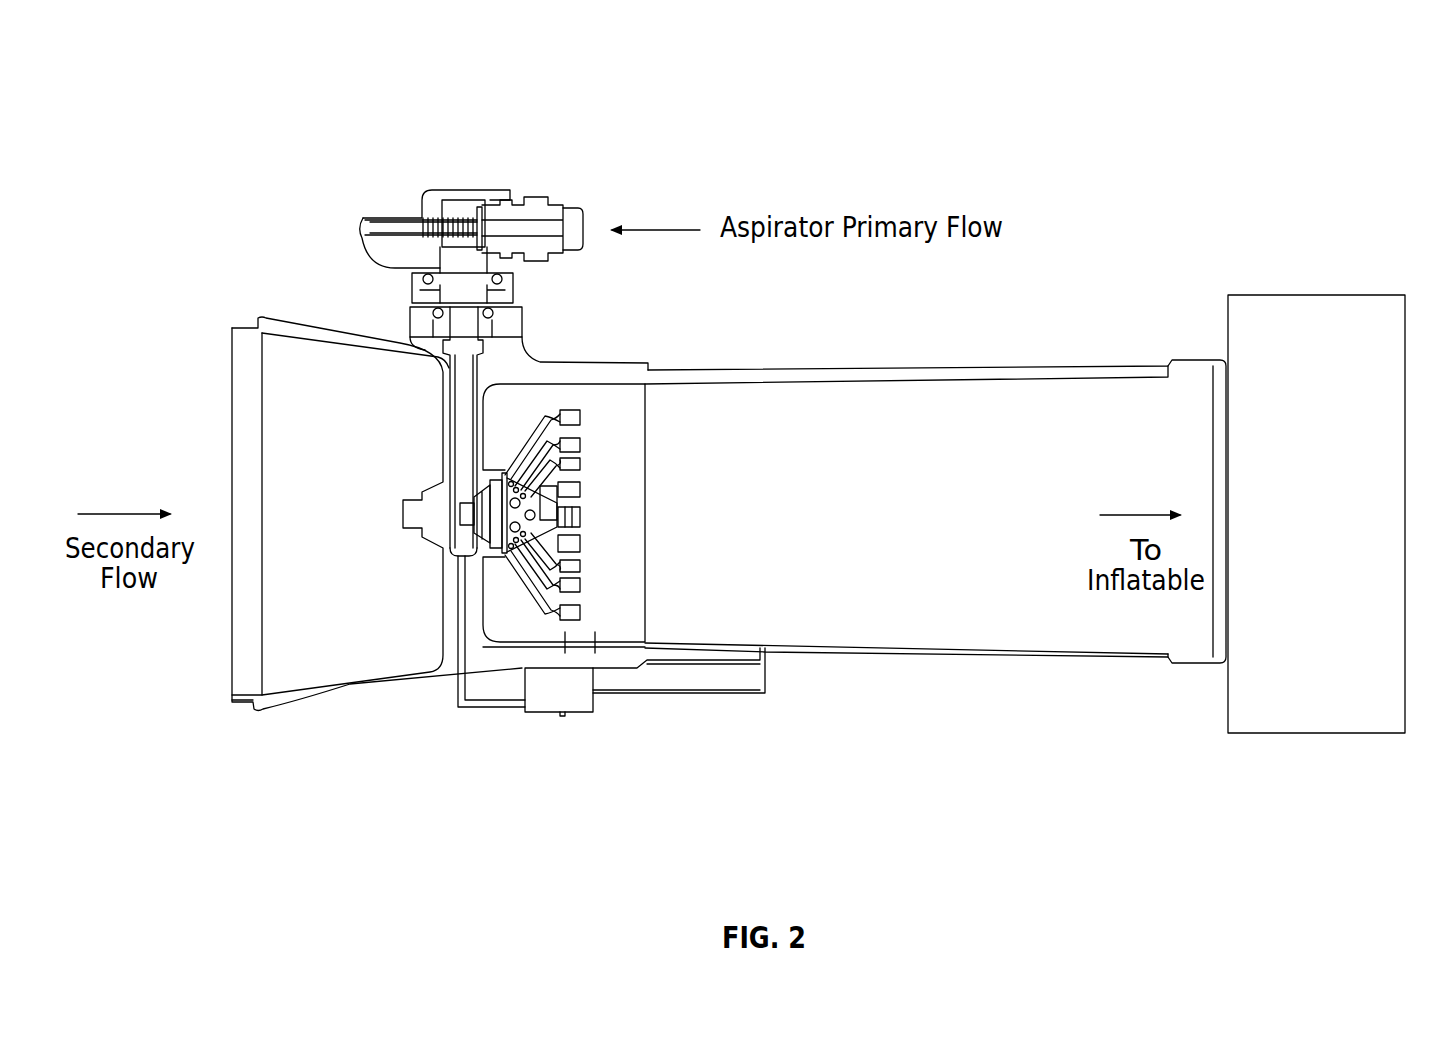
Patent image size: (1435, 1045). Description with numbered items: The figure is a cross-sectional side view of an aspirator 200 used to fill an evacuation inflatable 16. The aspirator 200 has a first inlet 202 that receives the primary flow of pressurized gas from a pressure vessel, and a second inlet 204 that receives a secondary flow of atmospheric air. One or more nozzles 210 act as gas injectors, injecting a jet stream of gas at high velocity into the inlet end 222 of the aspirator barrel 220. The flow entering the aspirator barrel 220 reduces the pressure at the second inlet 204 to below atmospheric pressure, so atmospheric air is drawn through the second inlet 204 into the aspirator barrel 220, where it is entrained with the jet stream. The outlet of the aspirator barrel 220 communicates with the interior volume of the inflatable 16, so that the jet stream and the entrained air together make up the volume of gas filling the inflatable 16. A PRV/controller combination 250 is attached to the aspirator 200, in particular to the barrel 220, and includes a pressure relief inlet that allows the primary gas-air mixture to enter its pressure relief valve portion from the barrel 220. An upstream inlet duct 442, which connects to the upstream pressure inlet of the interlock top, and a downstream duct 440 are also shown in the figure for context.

The aspirator 200 is at (220, 58).
The first inlet 202 is at (572, 208).
The second inlet 204 is at (229, 383).
The nozzles 210 is at (585, 462).
The aspirator barrel 220 is at (945, 366).
The inlet end 222 is at (620, 402).
The PRV/controller combination 250 is at (577, 702).
The downstream duct 440 is at (697, 693).
The upstream inlet duct 442 is at (470, 708).
The evacuation inflatable 16 is at (1316, 514).